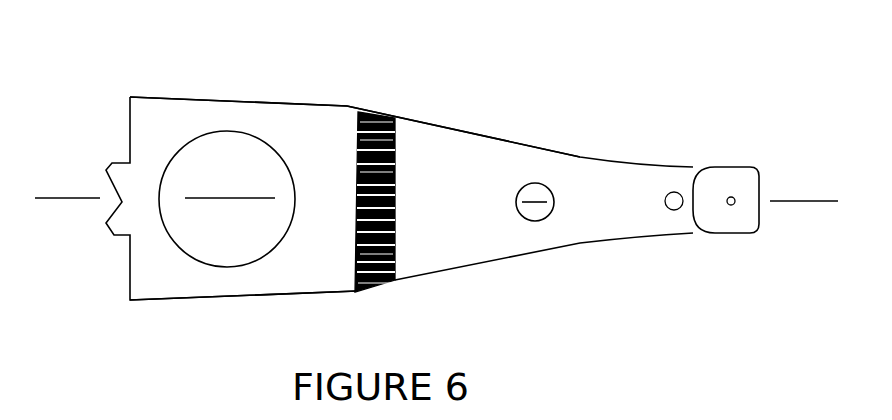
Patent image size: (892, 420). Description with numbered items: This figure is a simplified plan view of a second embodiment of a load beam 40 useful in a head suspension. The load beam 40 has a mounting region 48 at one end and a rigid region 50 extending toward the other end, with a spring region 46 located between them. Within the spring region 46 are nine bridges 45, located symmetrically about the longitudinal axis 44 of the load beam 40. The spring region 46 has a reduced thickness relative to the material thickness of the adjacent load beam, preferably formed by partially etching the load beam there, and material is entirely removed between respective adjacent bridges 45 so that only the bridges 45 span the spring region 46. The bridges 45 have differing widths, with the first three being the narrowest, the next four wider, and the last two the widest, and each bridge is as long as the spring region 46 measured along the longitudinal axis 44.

The load beam 40 is at (550, 135).
The longitudinal axis 44 is at (50, 198).
The bridges 45 is at (330, 248).
The spring region 46 is at (377, 107).
The mounting region 48 is at (228, 82).
The rigid region 50 is at (475, 125).